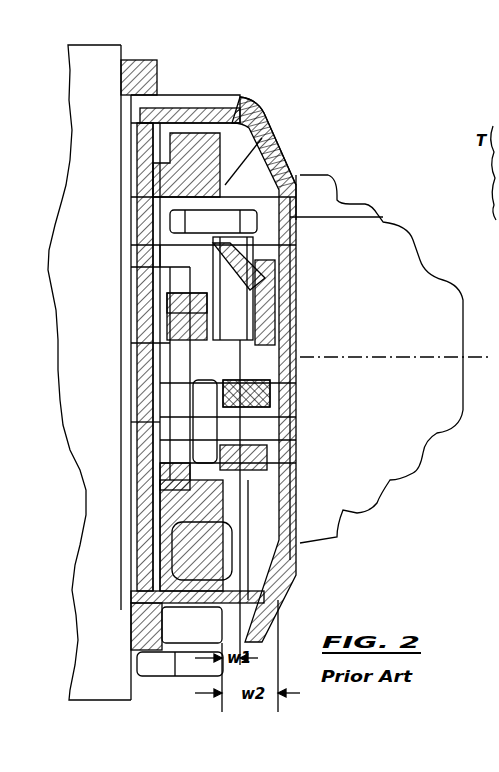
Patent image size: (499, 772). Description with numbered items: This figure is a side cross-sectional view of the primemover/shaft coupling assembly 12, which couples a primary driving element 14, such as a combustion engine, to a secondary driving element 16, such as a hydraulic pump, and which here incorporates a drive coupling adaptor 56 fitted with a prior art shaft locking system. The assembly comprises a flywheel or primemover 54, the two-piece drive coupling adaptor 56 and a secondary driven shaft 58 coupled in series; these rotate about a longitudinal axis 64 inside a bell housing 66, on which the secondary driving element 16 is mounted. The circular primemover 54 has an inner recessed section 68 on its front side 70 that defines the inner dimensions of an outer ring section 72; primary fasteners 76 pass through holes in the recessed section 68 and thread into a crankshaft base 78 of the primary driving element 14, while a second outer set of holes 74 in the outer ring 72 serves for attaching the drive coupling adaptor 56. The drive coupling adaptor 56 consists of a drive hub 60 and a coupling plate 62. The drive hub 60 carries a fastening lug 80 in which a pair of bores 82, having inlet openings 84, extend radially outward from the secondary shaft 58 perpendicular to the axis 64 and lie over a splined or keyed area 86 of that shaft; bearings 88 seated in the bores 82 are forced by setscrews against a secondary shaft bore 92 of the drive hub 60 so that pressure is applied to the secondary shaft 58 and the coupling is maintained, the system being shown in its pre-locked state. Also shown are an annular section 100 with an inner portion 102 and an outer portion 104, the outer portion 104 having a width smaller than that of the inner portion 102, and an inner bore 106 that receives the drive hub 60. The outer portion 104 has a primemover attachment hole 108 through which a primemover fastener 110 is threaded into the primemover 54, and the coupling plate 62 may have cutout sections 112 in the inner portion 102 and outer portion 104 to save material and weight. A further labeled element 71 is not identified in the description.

The primemover/shaft coupling assembly 12 is at (225, 118).
The primary driving element 14 is at (104, 121).
The secondary driving element 16 is at (437, 277).
The primemover 54 is at (152, 156).
The drive coupling adaptor 56 is at (277, 140).
The secondary driven shaft 58 is at (300, 350).
The drive hub 60 is at (300, 420).
The coupling plate 62 is at (220, 528).
The longitudinal axis 64 is at (158, 350).
The bell housing 66 is at (250, 97).
The inner recessed section 68 is at (160, 245).
The front side 70 is at (197, 633).
The member 71 is at (153, 283).
The outer ring section 72 is at (192, 150).
The second outer set of holes 74 is at (160, 195).
The primary fasteners 76 is at (150, 342).
The crankshaft base 78 is at (135, 422).
The fastening lug 80 is at (300, 270).
The bores 82 is at (160, 273).
The inlet openings 84 is at (290, 228).
The splined or keyed area 86 is at (300, 375).
The bearings 88 is at (295, 340).
The secondary shaft bore 92 is at (293, 395).
The annular section 100 is at (300, 490).
The inner portion 102 is at (290, 465).
The outer portion 104 is at (300, 543).
The inner bore 106 is at (297, 258).
The primemover attachment holes 108 is at (296, 175).
The primemover fasteners 110 is at (383, 217).
The cutout sections 112 is at (300, 440).